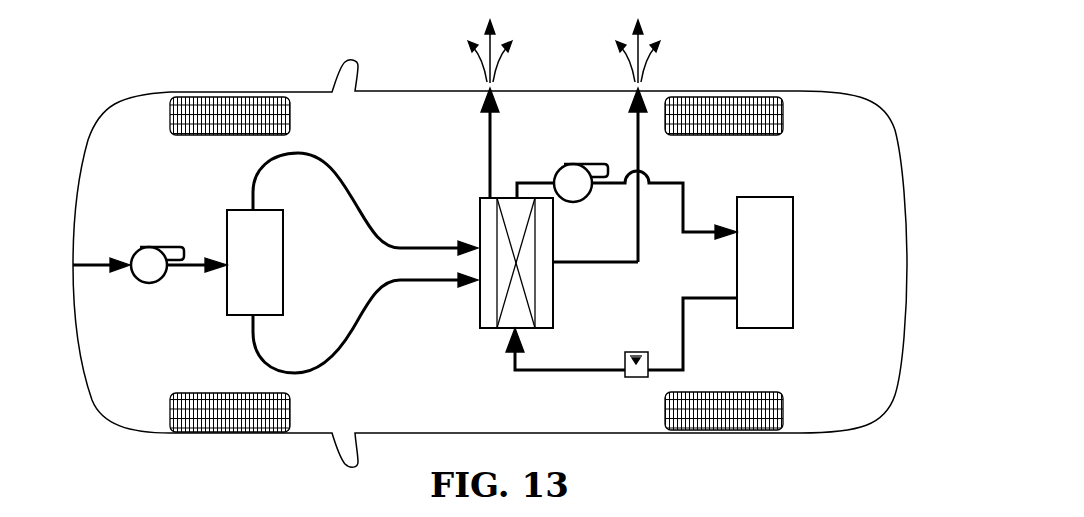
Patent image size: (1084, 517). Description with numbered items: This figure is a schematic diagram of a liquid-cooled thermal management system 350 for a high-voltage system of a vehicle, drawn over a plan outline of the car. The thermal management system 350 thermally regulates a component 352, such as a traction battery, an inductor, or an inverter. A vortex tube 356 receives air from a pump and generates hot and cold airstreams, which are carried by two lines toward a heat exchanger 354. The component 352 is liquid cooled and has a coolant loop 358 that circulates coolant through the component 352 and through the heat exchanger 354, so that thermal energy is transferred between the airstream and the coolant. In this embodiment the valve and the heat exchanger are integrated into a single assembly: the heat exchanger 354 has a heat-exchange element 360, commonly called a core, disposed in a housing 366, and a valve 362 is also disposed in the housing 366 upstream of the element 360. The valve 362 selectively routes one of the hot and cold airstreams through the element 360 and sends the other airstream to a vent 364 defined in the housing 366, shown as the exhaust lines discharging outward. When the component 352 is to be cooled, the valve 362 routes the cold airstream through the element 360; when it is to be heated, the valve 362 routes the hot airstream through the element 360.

The thermal management system 350 is at (198, 203).
The component 352 is at (655, 246).
The heat exchanger 354 is at (497, 256).
The vortex tube 356 is at (283, 268).
The coolant loop 358 is at (702, 345).
The heat-exchange element 360 is at (525, 290).
The valve 362 is at (478, 295).
The vent 364 is at (487, 197).
The housing 366 is at (488, 330).